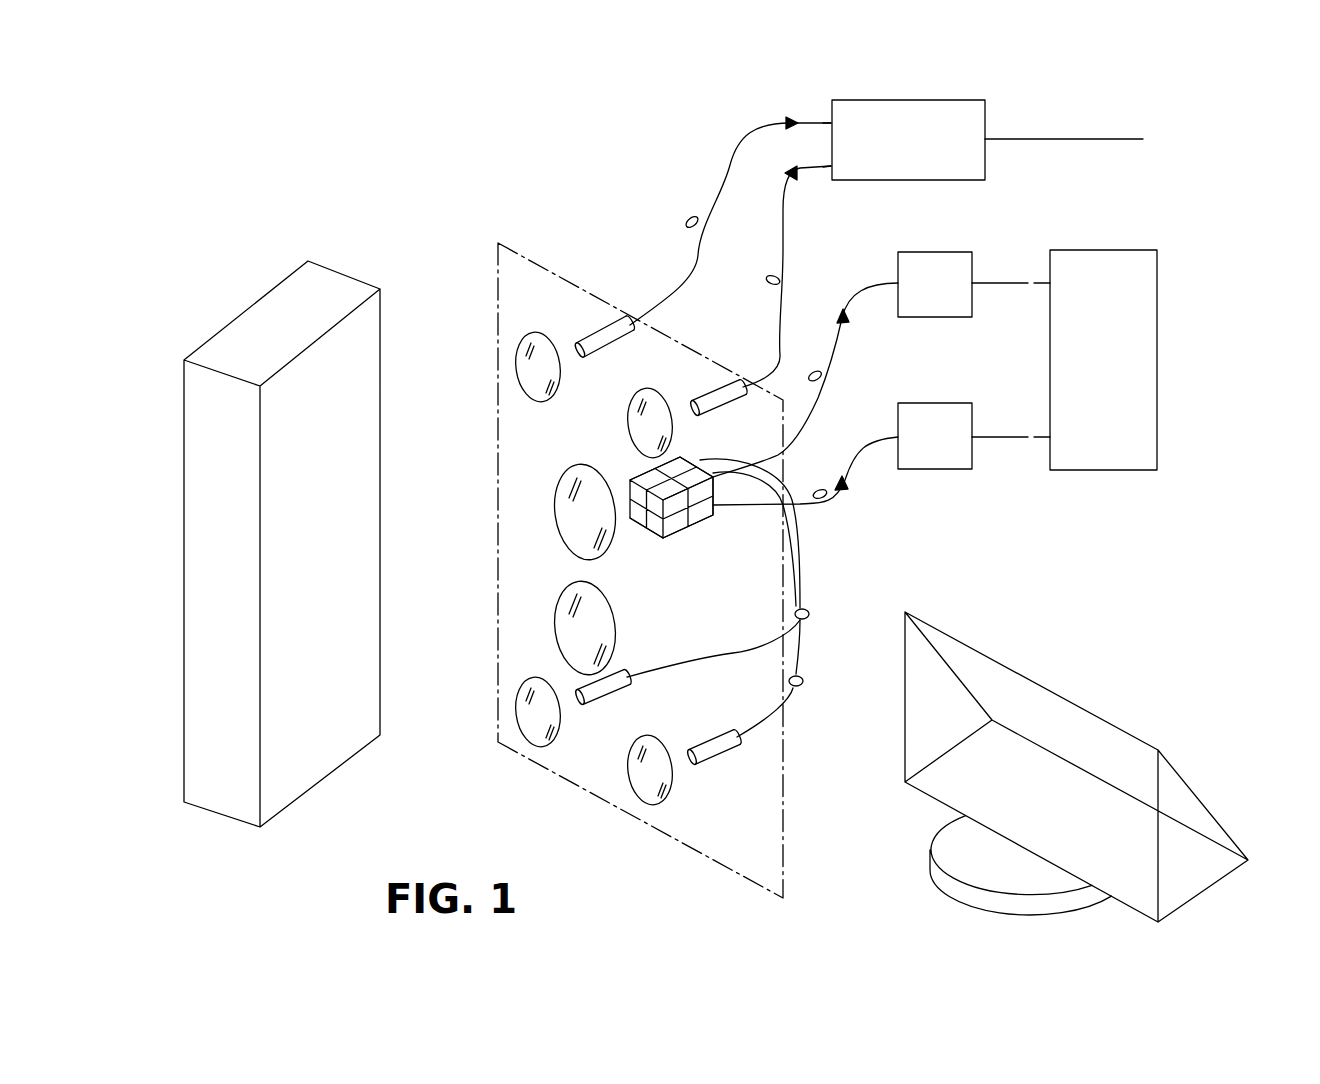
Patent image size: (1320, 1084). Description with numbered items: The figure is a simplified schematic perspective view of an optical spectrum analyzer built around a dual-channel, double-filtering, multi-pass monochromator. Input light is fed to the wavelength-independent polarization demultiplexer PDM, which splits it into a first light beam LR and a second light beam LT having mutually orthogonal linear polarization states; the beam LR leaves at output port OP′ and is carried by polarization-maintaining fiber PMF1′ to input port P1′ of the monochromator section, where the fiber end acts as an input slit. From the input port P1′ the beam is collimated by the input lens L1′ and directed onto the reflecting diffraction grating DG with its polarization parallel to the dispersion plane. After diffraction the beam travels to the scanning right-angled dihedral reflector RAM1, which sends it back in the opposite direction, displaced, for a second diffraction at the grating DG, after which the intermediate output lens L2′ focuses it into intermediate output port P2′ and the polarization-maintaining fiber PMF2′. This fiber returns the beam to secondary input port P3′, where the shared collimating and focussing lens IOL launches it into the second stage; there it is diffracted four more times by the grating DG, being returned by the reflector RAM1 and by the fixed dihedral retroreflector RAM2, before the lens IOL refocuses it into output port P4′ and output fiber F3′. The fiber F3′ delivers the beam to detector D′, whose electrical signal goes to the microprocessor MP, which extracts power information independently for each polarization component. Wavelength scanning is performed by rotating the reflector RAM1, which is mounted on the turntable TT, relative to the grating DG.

The reflecting diffraction grating DG is at (280, 307).
The input collimating lens L1′ is at (523, 355).
The shared collimating/focussing lens IOL is at (563, 528).
The fixed right-angled dihedral retroreflector RAM2 is at (563, 640).
The intermediate output focusing lens L2′ is at (533, 737).
The input port P1′ is at (593, 330).
The intermediate output port P2′ is at (593, 703).
The secondary input port P3′ is at (622, 478).
The output port P4′ is at (677, 520).
The polarization demultiplexer PDM is at (988, 130).
The polarization-maintaining fiber PMF1′ is at (727, 170).
The polarization-maintaining fiber PMF2′ is at (800, 552).
The first light beam LR is at (793, 123).
The second light beam LT is at (805, 173).
The output port OP′ is at (823, 123).
The detector D′ is at (974, 284).
The microprocessor MP is at (1103, 344).
The output fiber F3′ is at (840, 332).
The scanning right-angled dihedral reflector RAM1 is at (1190, 782).
The turntable TT is at (947, 875).